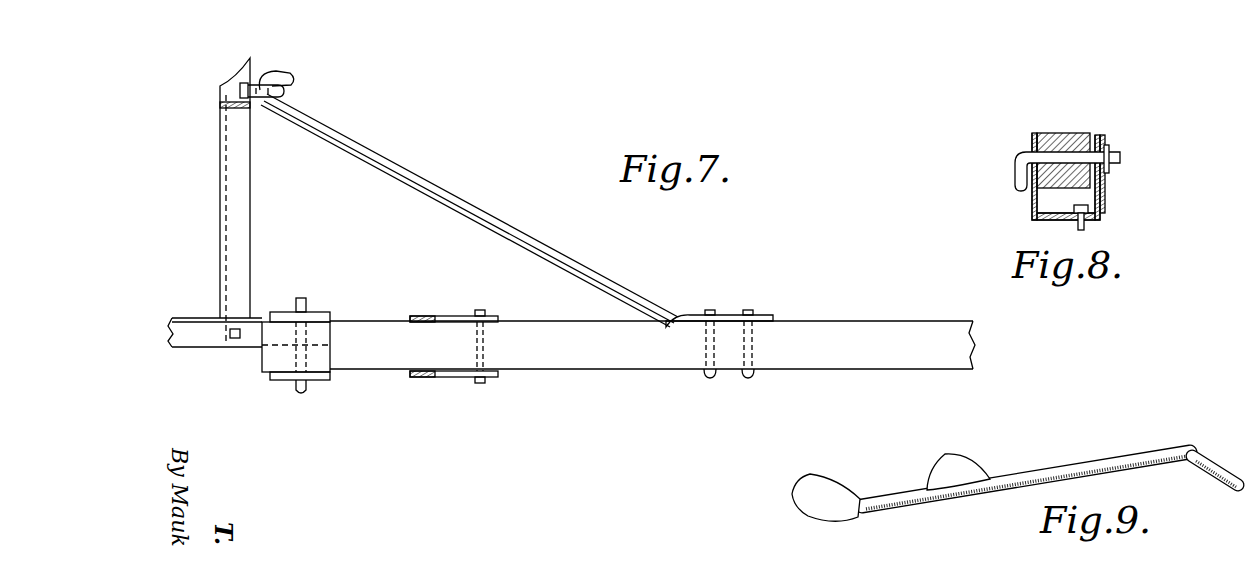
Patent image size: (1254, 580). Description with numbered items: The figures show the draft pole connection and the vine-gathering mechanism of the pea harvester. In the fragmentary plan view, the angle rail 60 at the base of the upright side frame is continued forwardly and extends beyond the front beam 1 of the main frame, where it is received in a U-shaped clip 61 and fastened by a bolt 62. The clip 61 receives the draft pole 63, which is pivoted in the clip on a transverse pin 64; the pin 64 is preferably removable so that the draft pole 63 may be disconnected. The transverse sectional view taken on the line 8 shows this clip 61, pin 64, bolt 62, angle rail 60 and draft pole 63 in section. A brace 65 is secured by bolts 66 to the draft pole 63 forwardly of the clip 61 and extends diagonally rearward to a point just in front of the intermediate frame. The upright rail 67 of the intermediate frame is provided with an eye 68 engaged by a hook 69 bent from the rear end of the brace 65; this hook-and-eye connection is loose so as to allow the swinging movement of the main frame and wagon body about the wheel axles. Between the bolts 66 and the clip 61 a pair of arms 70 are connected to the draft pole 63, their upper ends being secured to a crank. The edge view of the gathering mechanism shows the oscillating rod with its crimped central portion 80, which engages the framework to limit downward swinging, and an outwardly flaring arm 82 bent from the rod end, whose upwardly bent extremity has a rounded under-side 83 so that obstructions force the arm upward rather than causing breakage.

In FIG. 7, the front beam 1 is at (222, 220).
In FIG. 7, the section line 8— 8 is at (355, 268).
In FIG. 7, the angle rail 60 is at (186, 345).
In FIG. 8, the angle rail 60 is at (1105, 178).
In FIG. 7, the U-shaped clip 61 is at (330, 376).
In FIG. 8, the U-shaped clip 61 is at (1100, 196).
In FIG. 8, the bolt 62 is at (1088, 226).
In FIG. 7, the draft pole 63 is at (630, 355).
In FIG. 8, the draft pole 63 is at (1061, 132).
In FIG. 7, the transverse pin 64 is at (308, 303).
In FIG. 8, the transverse pin 64 is at (1121, 157).
In FIG. 7, the brace 65 is at (560, 248).
In FIG. 7, the bolts 66 is at (748, 309).
In FIG. 7, the upright rail 67 is at (232, 108).
In FIG. 7, the eye 68 is at (286, 93).
In FIG. 7, the hook 69 is at (292, 77).
In FIG. 7, the arms 70 is at (425, 370).
In FIG. 9, the crimped central portion 80 is at (1212, 462).
In FIG. 9, the divergent arm 82 is at (1050, 468).
In FIG. 9, the rounded under-sides 83 is at (800, 515).